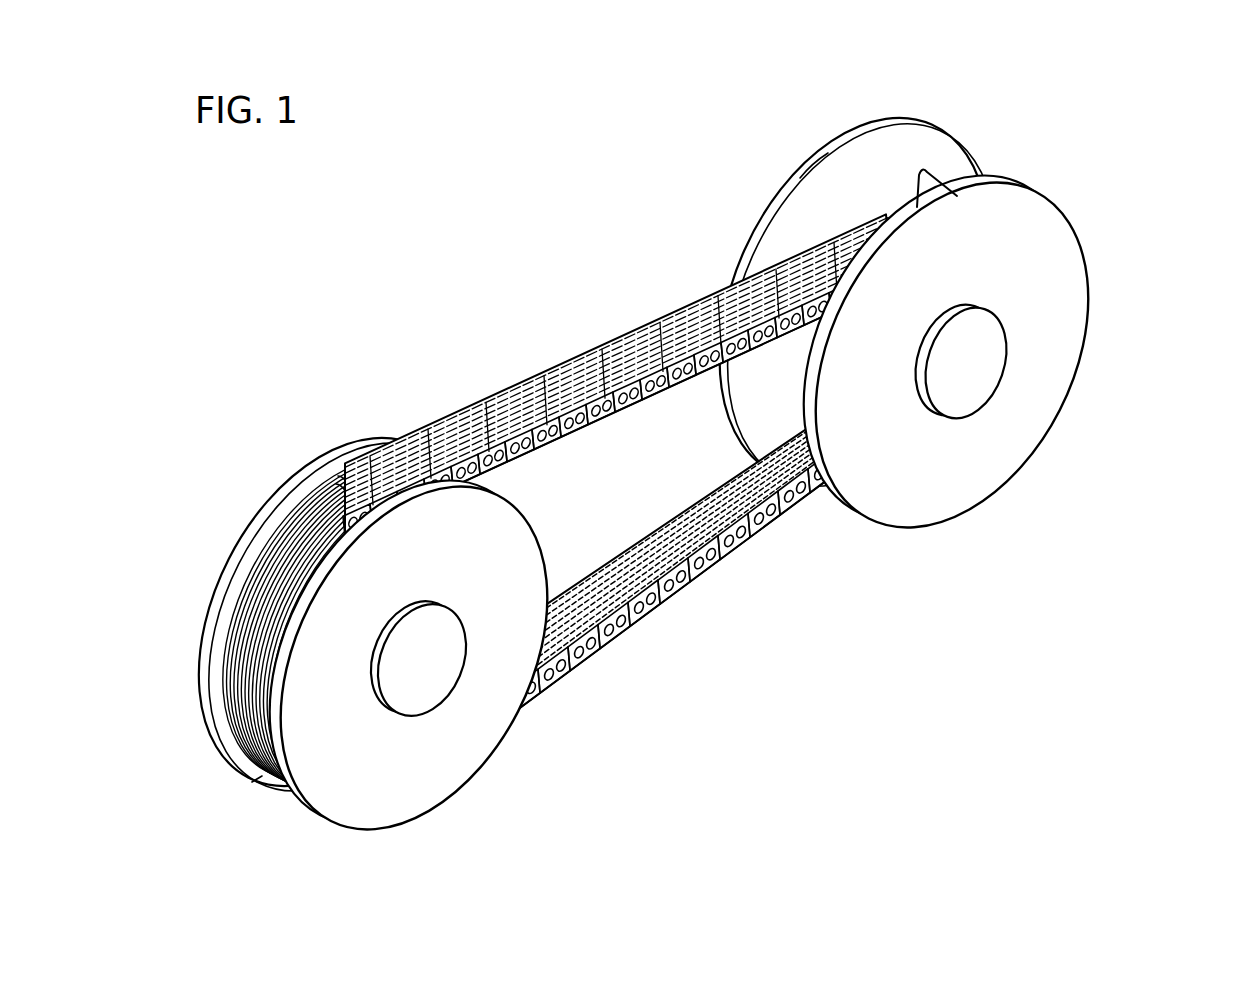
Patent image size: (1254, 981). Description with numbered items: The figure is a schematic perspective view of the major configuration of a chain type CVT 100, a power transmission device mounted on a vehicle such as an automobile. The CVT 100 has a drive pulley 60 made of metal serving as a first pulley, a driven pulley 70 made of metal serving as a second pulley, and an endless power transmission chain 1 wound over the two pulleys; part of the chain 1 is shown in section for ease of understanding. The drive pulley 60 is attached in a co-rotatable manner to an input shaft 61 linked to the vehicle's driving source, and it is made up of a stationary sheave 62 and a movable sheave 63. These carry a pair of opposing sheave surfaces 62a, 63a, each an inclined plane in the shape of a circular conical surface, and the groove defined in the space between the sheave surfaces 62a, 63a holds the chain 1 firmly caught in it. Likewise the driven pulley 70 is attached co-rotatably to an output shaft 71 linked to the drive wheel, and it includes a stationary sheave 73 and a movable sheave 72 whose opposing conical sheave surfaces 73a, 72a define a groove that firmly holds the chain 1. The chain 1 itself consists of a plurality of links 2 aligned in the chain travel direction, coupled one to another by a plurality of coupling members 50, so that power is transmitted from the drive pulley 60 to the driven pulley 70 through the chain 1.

The CVT 100 is at (928, 84).
The power transmission chain 1 is at (617, 475).
The link 2 is at (588, 420).
The coupling member 50 is at (603, 428).
The drive pulley 60 is at (333, 610).
The input shaft 61 is at (420, 695).
The stationary sheave 62 is at (257, 537).
The sheave surface 62a is at (350, 460).
The movable sheave 63 is at (313, 600).
The sheave surface 63a is at (258, 790).
The driven pulley 70 is at (995, 341).
The output shaft 71 is at (962, 395).
The movable sheave 72 is at (890, 122).
The sheave surface 72a is at (828, 197).
The stationary sheave 73 is at (1000, 181).
The sheave surface 73a is at (965, 182).